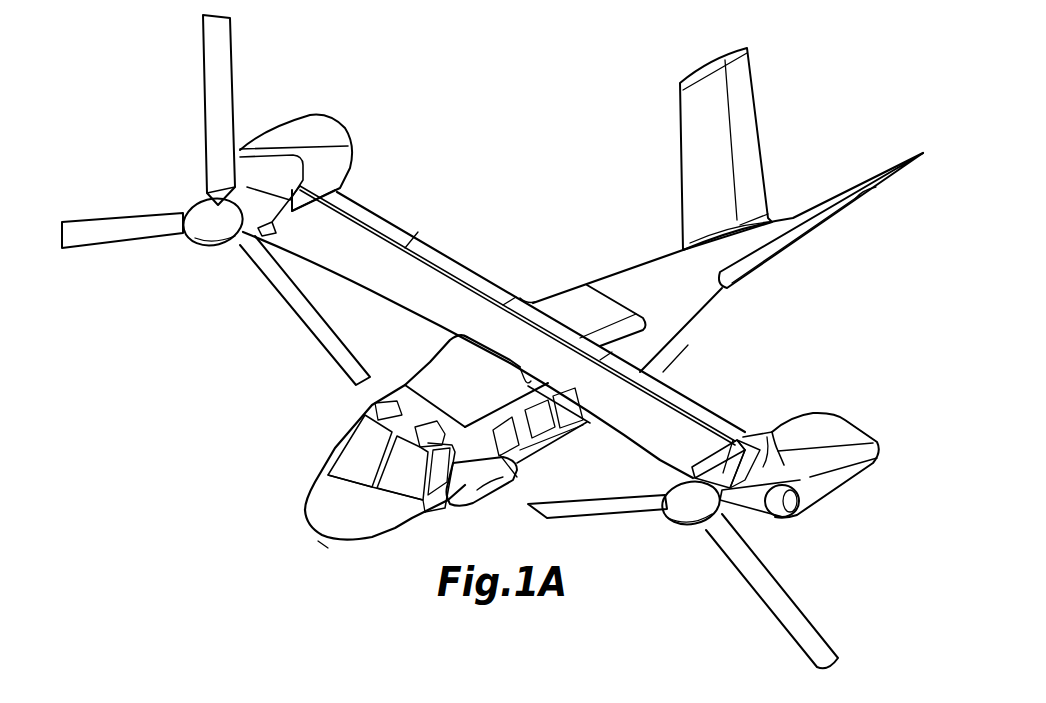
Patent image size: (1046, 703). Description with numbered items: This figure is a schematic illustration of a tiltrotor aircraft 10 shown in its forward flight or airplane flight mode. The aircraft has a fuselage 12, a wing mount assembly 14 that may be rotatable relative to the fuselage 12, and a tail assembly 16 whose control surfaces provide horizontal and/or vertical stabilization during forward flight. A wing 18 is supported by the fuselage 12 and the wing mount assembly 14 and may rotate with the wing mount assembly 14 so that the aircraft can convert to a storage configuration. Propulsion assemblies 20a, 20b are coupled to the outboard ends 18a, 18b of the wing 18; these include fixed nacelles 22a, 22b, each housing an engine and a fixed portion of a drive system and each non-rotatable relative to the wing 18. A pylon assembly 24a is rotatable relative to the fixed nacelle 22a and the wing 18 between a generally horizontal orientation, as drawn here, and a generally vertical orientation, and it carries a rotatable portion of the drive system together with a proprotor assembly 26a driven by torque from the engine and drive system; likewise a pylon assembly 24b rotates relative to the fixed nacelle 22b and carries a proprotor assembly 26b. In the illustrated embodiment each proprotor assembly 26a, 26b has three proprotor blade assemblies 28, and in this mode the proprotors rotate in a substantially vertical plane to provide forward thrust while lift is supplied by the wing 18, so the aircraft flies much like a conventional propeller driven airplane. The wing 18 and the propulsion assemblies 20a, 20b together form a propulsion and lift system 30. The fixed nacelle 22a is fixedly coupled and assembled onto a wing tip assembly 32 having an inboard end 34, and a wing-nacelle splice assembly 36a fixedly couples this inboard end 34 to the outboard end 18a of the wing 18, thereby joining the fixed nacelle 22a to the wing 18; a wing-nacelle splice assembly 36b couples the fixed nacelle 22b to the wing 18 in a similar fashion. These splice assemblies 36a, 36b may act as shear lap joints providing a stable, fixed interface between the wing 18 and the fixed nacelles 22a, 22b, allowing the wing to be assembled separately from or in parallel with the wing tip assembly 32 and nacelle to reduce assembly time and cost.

The tiltrotor aircraft 10 is at (533, 157).
The fuselage 12 is at (643, 268).
The wing mount assembly 14 is at (563, 300).
The tail assembly 16 is at (763, 123).
The wing 18 is at (405, 264).
The outboard end of wing 18a is at (692, 468).
The outboard end of wing 18b is at (365, 208).
The propulsion assembly 20a is at (840, 420).
The propulsion assembly 20b is at (323, 116).
The fixed nacelle 22a is at (878, 455).
The fixed nacelle 22b is at (293, 117).
The pylon assembly 24a is at (775, 440).
The pylon assembly 24b is at (248, 185).
The proprotor assembly 26a is at (663, 517).
The proprotor assembly 26b is at (187, 243).
The proprotor blade assemblies 28 is at (205, 72).
The propulsion and lift system 30 is at (463, 298).
The wing tip assembly 32 is at (737, 455).
The inboard end of wing tip assembly 34 is at (697, 485).
The wing-nacelle splice assembly 36a is at (733, 463).
The wing-nacelle splice assembly 36b is at (299, 213).